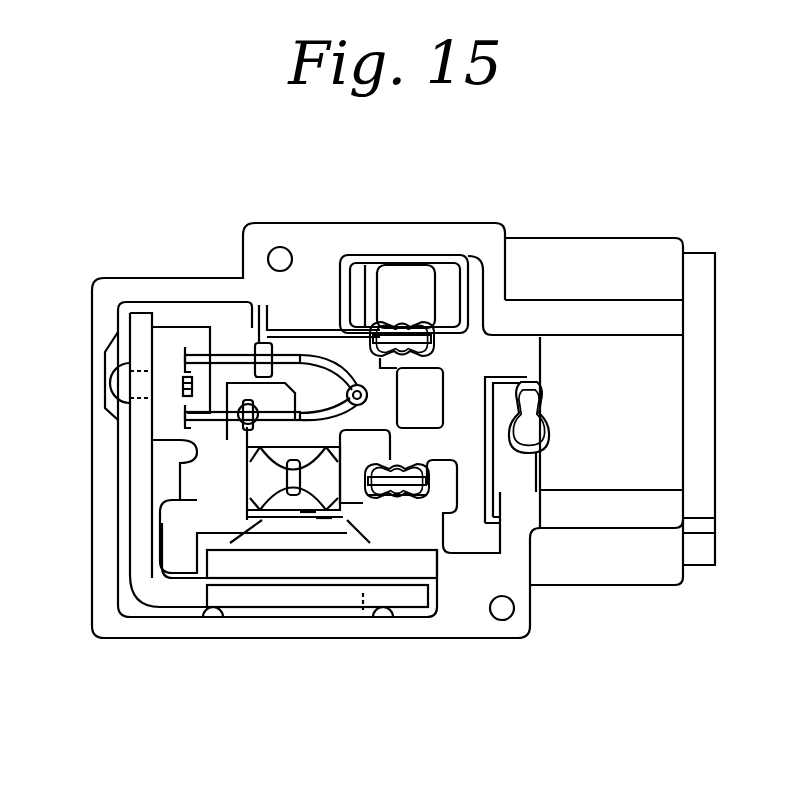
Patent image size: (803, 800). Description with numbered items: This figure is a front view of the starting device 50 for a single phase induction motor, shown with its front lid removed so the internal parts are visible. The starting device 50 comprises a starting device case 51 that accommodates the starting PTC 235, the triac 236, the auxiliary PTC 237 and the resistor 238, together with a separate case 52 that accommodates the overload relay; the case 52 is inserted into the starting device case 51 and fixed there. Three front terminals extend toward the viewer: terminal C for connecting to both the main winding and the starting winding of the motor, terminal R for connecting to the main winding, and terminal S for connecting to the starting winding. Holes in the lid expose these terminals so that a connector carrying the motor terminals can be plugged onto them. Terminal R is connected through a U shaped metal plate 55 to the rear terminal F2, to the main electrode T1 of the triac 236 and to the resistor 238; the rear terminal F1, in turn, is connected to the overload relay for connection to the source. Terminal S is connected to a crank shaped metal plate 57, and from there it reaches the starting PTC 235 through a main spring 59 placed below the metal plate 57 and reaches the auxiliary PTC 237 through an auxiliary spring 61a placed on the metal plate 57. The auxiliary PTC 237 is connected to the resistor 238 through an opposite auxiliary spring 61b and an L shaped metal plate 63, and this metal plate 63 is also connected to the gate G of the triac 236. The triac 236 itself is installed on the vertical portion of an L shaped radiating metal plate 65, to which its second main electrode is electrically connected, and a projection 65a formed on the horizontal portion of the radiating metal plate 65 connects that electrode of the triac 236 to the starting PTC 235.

The starting device 50 is at (178, 220).
The starting device case 51 is at (397, 221).
The case 52 is at (610, 352).
The U shaped metal plate 55 is at (353, 310).
The crank shaped metal plate 57 is at (308, 512).
The main spring 59 is at (323, 518).
The auxiliary spring 61a is at (243, 494).
The opposite auxiliary spring 61b is at (258, 452).
The L shaped metal plate 63 is at (250, 442).
The L shaped radiating metal plate 65 is at (118, 332).
The projection 65a is at (277, 580).
The starting PTC 235 is at (243, 572).
The triac 236 is at (160, 383).
The auxiliary PTC 237 is at (332, 458).
The resistor 238 is at (322, 333).
The main electrode T1 is at (208, 327).
The terminal F1 is at (452, 495).
The terminal F2 is at (380, 253).
The terminal R is at (397, 318).
The terminal C is at (527, 384).
The gate G is at (135, 415).
The terminal S is at (404, 553).